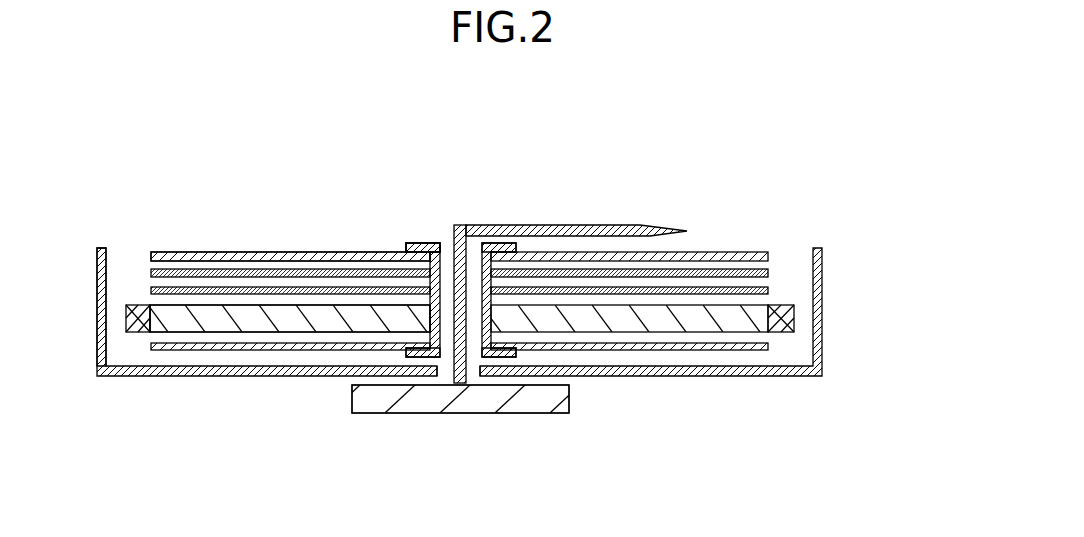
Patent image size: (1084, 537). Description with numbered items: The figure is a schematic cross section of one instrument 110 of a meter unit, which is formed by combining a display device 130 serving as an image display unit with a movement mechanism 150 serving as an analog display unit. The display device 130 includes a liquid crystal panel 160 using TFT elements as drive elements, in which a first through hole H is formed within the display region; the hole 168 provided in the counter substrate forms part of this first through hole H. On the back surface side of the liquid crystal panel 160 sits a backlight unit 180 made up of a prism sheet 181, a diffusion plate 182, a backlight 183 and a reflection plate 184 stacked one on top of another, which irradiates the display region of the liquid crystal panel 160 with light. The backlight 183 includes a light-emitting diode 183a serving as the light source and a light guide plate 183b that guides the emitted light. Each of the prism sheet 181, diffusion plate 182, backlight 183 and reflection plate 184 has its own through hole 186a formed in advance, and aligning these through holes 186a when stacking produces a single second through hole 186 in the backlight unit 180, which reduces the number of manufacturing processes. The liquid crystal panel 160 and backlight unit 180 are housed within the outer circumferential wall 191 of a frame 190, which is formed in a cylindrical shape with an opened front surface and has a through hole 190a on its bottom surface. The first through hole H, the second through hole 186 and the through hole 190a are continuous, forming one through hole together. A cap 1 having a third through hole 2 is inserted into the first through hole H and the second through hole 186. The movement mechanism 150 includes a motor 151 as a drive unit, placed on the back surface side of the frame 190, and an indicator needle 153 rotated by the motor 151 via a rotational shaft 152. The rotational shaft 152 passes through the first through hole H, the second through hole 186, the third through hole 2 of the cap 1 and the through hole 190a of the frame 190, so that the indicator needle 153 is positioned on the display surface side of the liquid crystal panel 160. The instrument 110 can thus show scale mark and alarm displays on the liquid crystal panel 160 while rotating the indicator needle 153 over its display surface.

The instrument 110 is at (825, 135).
The display device 130 is at (756, 247).
The movement mechanism 150 is at (367, 425).
The motor 151 is at (569, 397).
The rotational shaft 152 is at (455, 226).
The indicator needle 153 is at (542, 225).
The liquid crystal panel 160 is at (712, 252).
The hole 168 is at (441, 250).
The backlight unit 180 is at (878, 257).
The prism sheet 181 is at (769, 271).
The diffusion plate 182 is at (769, 290).
The backlight 183 is at (798, 317).
The light-emitting diode 183a is at (137, 333).
The light guide plate 183b is at (225, 333).
The reflection plate 184 is at (769, 347).
The second through hole 186 is at (440, 320).
The through holes 186a is at (484, 270).
The frame 190 is at (790, 378).
The through hole 190a is at (440, 386).
The outer circumferential wall 191 is at (96, 278).
The cap 1 is at (405, 238).
The third through hole 2 is at (450, 282).
The first through hole H is at (445, 236).